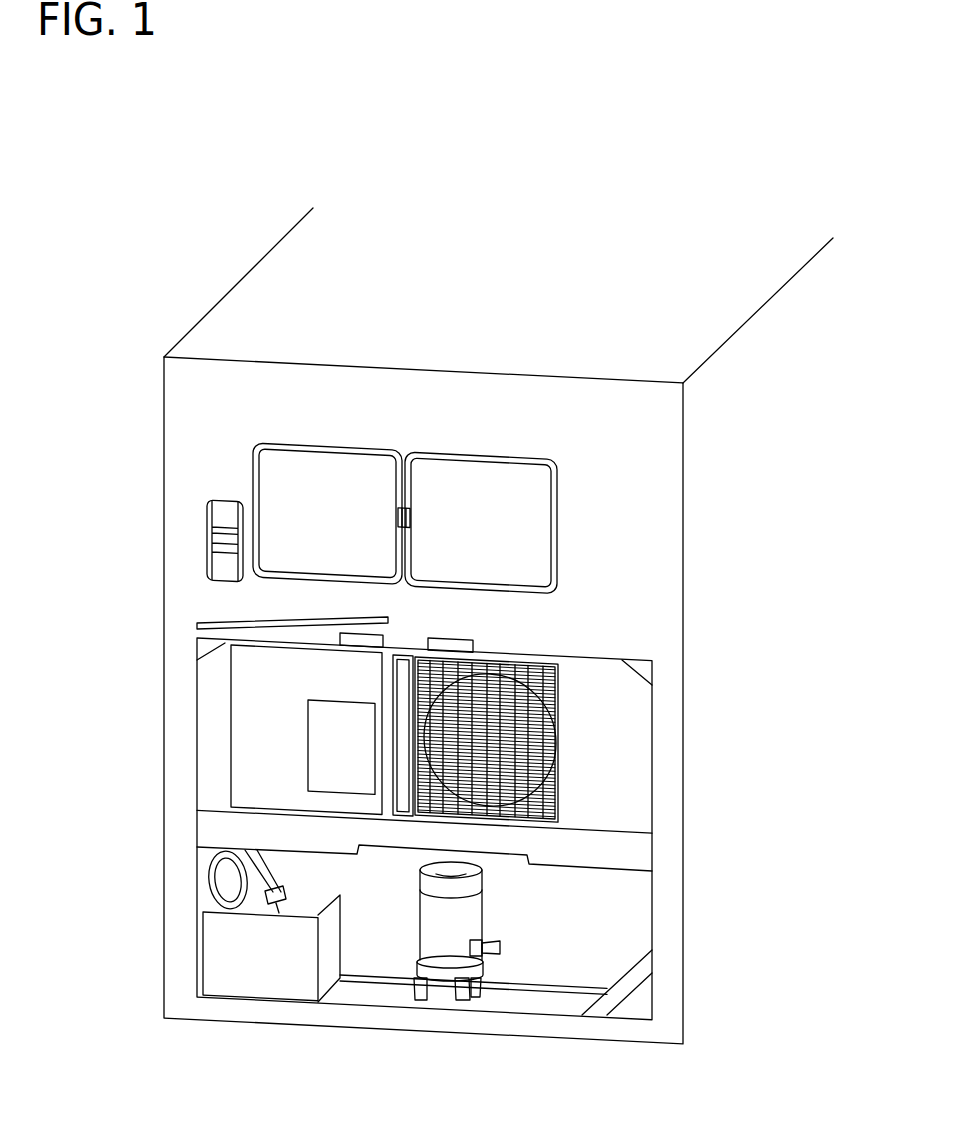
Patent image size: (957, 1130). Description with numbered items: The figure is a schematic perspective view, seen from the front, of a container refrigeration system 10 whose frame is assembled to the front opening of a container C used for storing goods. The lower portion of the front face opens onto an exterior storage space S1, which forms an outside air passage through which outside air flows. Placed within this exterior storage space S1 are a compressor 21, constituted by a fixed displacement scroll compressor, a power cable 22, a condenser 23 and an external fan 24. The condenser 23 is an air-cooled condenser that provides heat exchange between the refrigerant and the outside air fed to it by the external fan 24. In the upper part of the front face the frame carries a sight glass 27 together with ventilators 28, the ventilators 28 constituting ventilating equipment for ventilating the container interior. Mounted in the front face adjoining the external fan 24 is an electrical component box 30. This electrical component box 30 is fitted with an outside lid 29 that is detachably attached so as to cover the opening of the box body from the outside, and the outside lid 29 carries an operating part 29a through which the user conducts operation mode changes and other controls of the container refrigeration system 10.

The container refrigeration system 10 is at (161, 278).
The container C is at (275, 283).
The sight glass 27 is at (468, 482).
The ventilators 28 is at (224, 513).
The electrical component box 30 is at (222, 680).
The outside lid 29 is at (243, 712).
The operating part 29a is at (320, 750).
The external fan 24 is at (557, 698).
The condenser 23 is at (638, 852).
The power cable 22 is at (203, 867).
The compressor 21 is at (440, 957).
The exterior storage space S1 is at (380, 913).